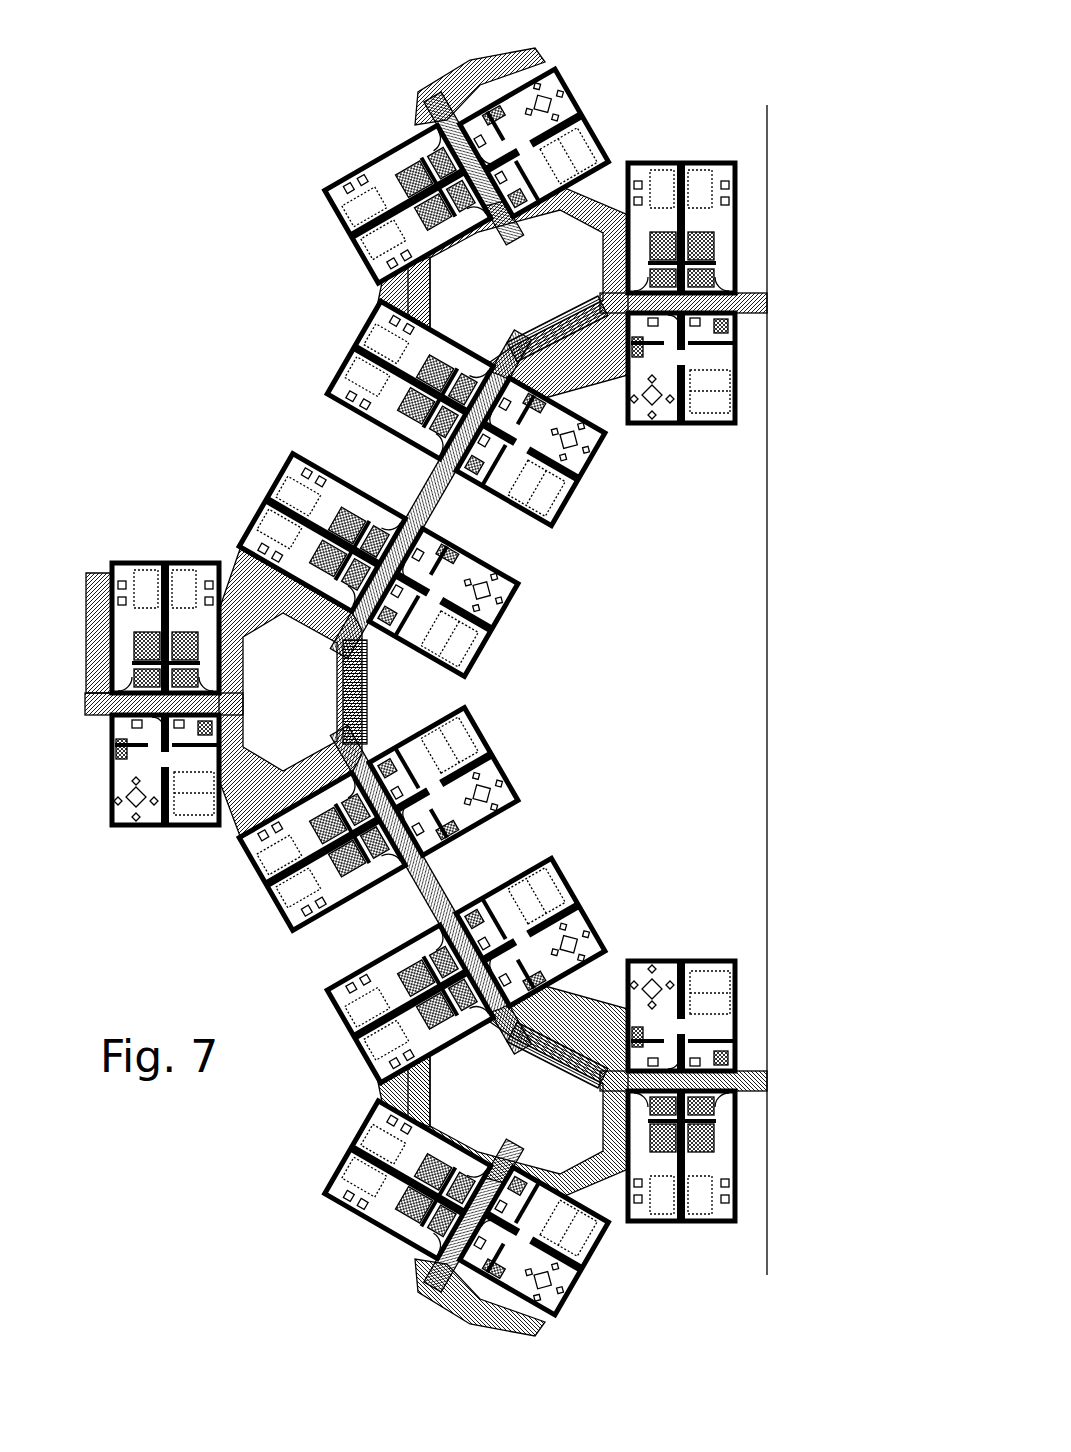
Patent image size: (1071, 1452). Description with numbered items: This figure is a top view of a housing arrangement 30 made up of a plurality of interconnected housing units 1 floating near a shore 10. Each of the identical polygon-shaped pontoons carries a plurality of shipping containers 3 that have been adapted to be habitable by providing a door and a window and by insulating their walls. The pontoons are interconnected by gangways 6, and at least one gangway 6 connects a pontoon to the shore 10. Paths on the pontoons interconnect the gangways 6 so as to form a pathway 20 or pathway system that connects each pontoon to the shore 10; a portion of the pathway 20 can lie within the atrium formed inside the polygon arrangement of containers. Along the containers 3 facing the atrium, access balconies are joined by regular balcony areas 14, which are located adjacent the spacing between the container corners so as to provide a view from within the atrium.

The modular building 1 is at (383, 110).
The shipping container 3 is at (545, 52).
The gangway 6 is at (764, 298).
The shore 10 is at (815, 727).
The balcony area 14 is at (380, 290).
The pathway 20 is at (428, 690).
The housing arrangement 30 is at (168, 272).